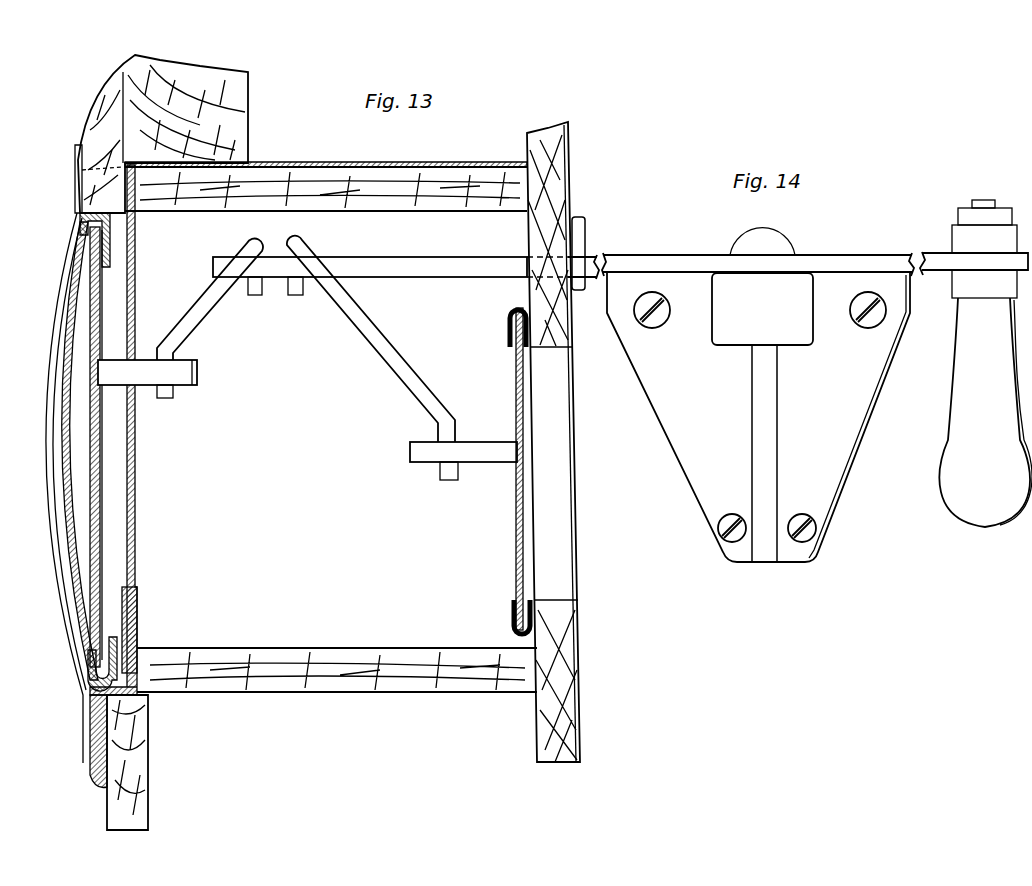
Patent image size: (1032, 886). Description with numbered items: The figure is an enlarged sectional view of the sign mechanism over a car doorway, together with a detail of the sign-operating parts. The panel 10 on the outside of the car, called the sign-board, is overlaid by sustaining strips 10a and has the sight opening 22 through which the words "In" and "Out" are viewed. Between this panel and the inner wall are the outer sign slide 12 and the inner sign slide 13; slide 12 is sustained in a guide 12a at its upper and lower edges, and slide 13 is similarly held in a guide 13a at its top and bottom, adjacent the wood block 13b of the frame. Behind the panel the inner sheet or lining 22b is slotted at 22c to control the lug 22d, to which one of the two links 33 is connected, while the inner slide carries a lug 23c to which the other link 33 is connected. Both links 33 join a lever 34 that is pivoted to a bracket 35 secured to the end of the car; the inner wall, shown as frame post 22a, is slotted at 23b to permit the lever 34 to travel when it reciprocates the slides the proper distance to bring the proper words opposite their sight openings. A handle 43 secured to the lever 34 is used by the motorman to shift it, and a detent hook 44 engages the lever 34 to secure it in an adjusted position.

In FIG. 13, the panel 10 is at (62, 297).
In FIG. 13, the sustaining strips 10a is at (72, 203).
In FIG. 13, the outer sign slide 12 is at (93, 500).
In FIG. 13, the guide 12a is at (107, 243).
In FIG. 13, the inner sign slide 13 is at (515, 350).
In FIG. 13, the guide 13a is at (507, 332).
In FIG. 13, the frame block 13b is at (562, 335).
In FIG. 13, the sight opening 22 is at (62, 457).
In FIG. 13, the frame post 22a is at (553, 525).
In FIG. 13, the inner sheet or lining 22b is at (137, 432).
In FIG. 13, the slot 22c is at (136, 350).
In FIG. 13, the lug 22d is at (198, 372).
In FIG. 13, the slot 23b is at (527, 255).
In FIG. 13, the lug 23c is at (505, 412).
In FIG. 13, the links 33 is at (207, 300).
In FIG. 13, the lever 34 is at (463, 262).
In FIG. 14, the lever 34 is at (862, 232).
In FIG. 14, the bracket 35 is at (835, 462).
In FIG. 14, the handle 43 is at (960, 450).
In FIG. 13, the detent hook 44 is at (585, 225).